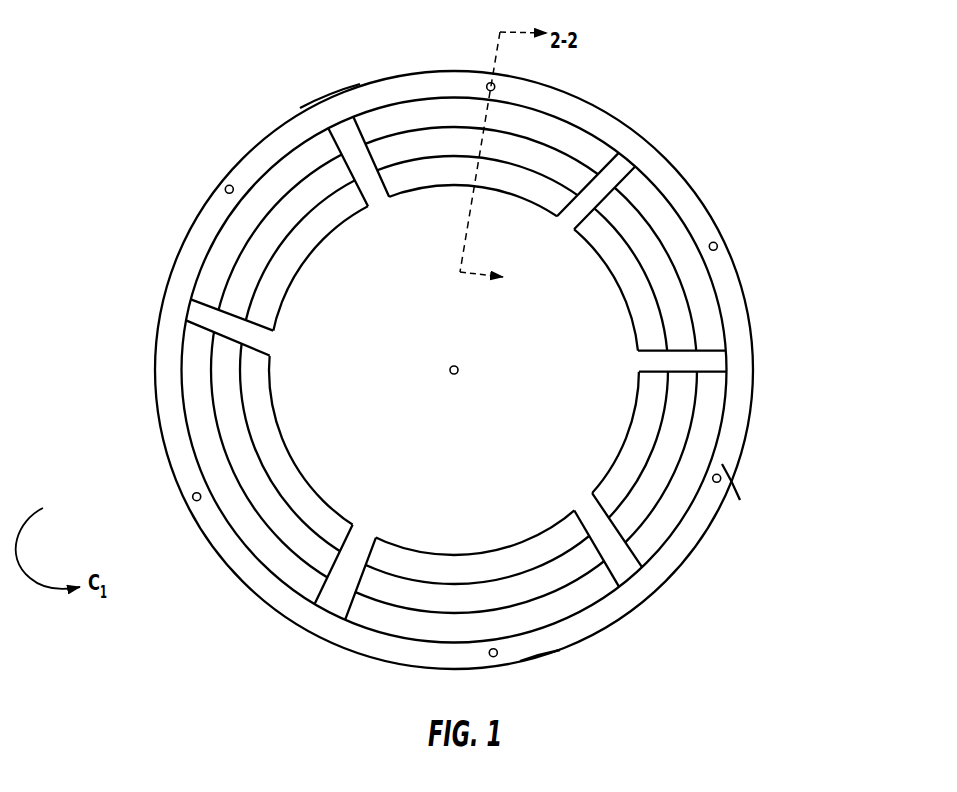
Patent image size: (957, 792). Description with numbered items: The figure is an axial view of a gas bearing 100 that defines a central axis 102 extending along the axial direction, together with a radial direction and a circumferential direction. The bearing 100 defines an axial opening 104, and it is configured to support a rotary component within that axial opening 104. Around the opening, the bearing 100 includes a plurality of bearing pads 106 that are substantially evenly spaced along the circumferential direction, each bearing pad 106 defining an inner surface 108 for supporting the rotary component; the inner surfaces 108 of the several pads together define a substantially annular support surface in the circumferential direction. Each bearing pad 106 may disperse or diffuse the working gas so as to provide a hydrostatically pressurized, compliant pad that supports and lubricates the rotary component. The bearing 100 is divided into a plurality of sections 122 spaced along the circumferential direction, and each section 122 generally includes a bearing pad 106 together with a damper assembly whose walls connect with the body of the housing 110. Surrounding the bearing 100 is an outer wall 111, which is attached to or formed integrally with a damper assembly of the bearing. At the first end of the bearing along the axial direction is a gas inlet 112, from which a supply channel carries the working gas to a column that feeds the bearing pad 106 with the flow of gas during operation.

The gas bearing 100 is at (782, 148).
The central axis 102 is at (458, 365).
The axial opening 104 is at (352, 492).
The bearing pad 106 is at (292, 267).
The inner surface 108 is at (343, 223).
The housing 110 is at (413, 85).
The outer wall 111 is at (333, 97).
The gas inlet 112 is at (228, 180).
The section 122 is at (753, 492).